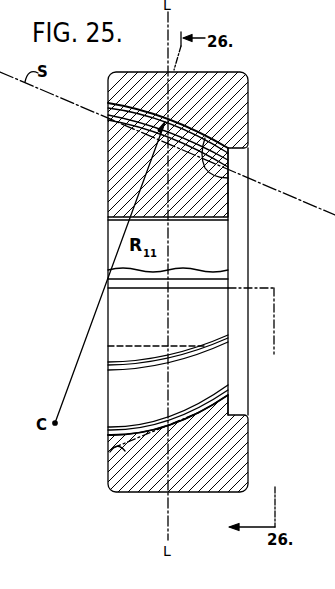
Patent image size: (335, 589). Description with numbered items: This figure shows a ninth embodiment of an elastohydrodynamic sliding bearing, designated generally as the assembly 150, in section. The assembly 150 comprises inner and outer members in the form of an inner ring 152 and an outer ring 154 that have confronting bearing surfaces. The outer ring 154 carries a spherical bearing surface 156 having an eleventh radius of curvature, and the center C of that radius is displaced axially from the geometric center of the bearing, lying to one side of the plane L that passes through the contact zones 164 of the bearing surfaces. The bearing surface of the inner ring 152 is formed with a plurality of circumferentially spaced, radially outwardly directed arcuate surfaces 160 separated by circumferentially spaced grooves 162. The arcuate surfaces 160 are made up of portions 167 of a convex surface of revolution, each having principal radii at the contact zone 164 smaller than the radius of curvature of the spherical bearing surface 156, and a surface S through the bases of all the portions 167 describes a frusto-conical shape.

The elastohydrodynamic sliding bearing assembly 150 is at (250, 98).
The inner ring 152 is at (115, 324).
The outer ring 154 is at (117, 88).
The spherical bearing surface 156 is at (140, 108).
The arcuate surfaces 160 is at (127, 122).
The grooves 162 is at (230, 163).
The contact zones 164 is at (200, 83).
The portions of a convex surface of revolution 167 is at (228, 178).